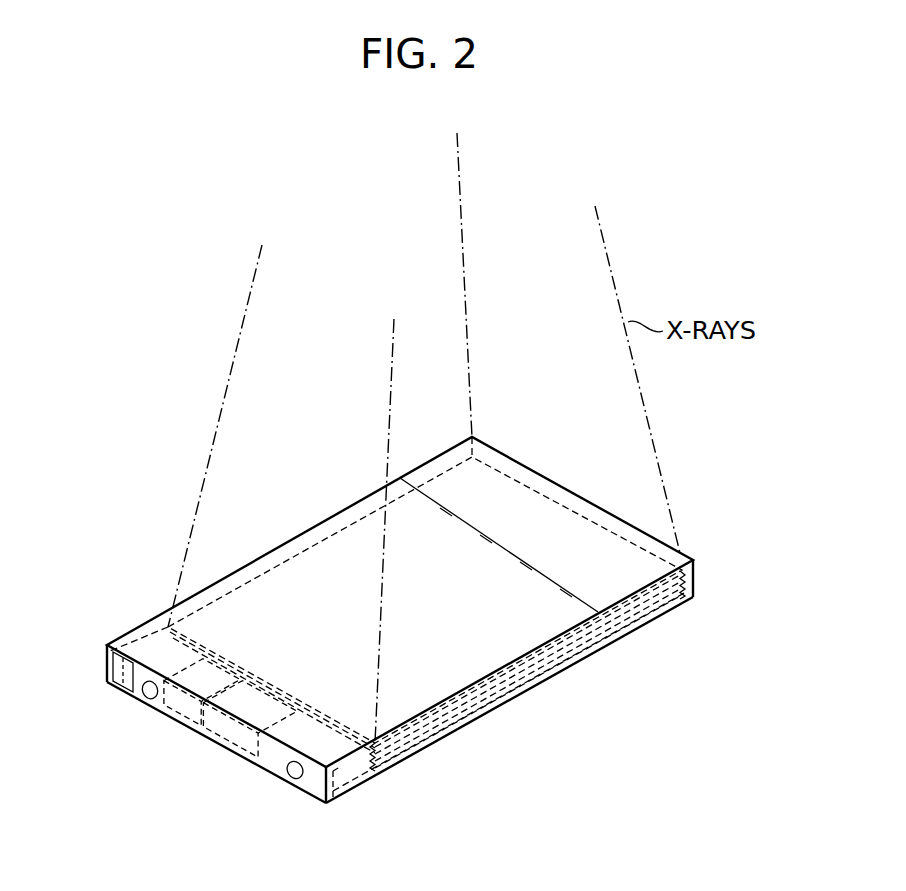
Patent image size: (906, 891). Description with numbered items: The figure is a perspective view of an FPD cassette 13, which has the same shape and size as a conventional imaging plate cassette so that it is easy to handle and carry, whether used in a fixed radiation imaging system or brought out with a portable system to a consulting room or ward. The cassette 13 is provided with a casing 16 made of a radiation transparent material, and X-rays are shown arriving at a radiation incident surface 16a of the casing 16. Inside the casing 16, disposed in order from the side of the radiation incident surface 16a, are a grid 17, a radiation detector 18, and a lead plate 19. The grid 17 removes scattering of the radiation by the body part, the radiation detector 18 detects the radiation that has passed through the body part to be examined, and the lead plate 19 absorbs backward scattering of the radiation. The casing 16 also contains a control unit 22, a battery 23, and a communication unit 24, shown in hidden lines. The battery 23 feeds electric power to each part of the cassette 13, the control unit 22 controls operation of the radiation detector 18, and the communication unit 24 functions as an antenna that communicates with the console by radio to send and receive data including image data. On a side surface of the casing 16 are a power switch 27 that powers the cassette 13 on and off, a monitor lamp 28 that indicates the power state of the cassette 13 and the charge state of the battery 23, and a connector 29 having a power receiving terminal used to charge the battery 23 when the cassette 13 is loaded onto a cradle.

The cassette 13 is at (550, 698).
The casing 16 is at (603, 648).
The radiation incident surface 16a is at (522, 518).
The grid 17 is at (405, 675).
The radiation detector 18 is at (402, 760).
The lead plate 19 is at (455, 737).
The control unit 22 is at (228, 730).
The battery 23 is at (185, 707).
The communication unit 24 is at (305, 793).
The power switch 27 is at (110, 684).
The monitor lamp 28 is at (146, 698).
The connector 29 is at (287, 780).